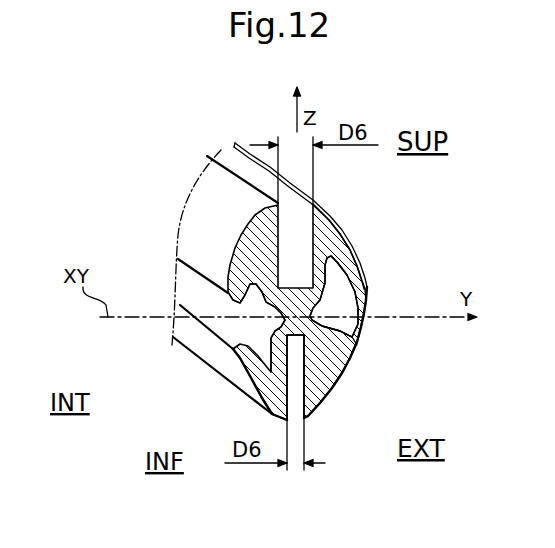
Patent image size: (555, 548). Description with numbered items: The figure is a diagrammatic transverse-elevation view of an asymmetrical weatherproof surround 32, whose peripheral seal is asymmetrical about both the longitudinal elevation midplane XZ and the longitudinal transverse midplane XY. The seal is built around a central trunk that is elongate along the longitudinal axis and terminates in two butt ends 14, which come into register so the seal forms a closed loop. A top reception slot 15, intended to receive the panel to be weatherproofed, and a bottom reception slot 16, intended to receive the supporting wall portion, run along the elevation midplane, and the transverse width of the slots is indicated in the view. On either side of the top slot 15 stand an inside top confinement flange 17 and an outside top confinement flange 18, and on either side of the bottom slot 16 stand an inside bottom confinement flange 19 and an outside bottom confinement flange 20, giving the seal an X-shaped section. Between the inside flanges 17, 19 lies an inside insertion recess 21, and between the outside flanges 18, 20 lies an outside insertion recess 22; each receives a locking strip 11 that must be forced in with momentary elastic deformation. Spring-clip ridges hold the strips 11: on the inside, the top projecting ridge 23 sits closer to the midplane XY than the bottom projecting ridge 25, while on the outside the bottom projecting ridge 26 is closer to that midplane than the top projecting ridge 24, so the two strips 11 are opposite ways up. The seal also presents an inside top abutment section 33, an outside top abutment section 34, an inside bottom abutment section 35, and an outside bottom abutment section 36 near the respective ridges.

The locking strip 11 is at (268, 322).
The butt end 14 is at (340, 405).
The top reception slot 15 is at (222, 150).
The bottom reception slot 16 is at (296, 426).
The inside top confinement flange 17 is at (194, 209).
The outside top confinement flange 18 is at (243, 165).
The inside bottom confinement flange 19 is at (223, 363).
The outside bottom confinement flange 20 is at (371, 375).
The inside insertion recess 21 is at (108, 318).
The outside insertion recess 22 is at (446, 393).
The inside top projecting ridge 23 is at (183, 256).
The outside top projecting ridge 24 is at (362, 280).
The inside bottom projecting ridge 25 is at (146, 327).
The outside bottom projecting ridge 26 is at (357, 345).
The weatherproof surround 32 is at (113, 189).
The inside top abutment section 33 is at (230, 300).
The outside top abutment section 34 is at (341, 270).
The inside bottom abutment section 35 is at (268, 415).
The outside bottom abutment section 36 is at (358, 322).